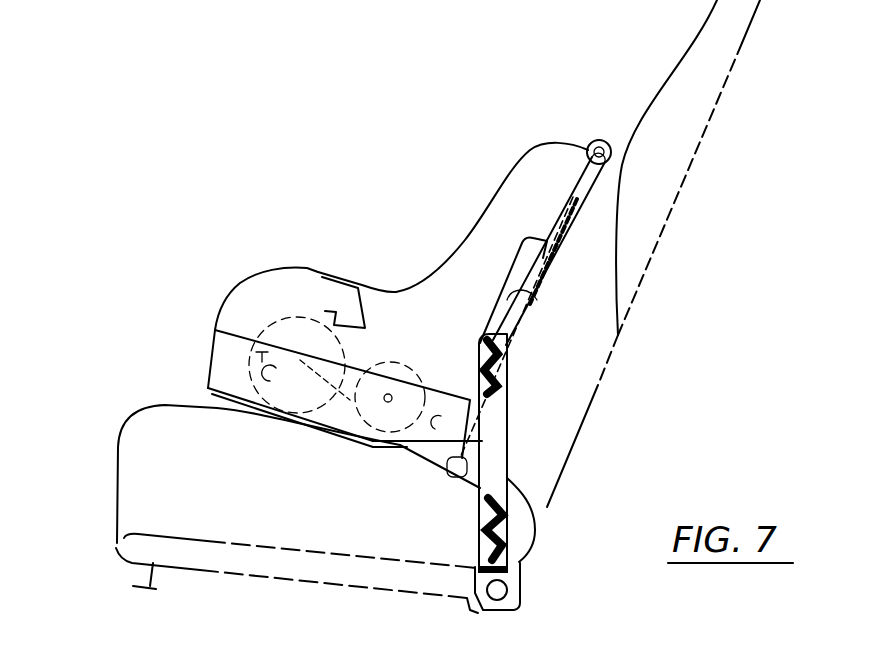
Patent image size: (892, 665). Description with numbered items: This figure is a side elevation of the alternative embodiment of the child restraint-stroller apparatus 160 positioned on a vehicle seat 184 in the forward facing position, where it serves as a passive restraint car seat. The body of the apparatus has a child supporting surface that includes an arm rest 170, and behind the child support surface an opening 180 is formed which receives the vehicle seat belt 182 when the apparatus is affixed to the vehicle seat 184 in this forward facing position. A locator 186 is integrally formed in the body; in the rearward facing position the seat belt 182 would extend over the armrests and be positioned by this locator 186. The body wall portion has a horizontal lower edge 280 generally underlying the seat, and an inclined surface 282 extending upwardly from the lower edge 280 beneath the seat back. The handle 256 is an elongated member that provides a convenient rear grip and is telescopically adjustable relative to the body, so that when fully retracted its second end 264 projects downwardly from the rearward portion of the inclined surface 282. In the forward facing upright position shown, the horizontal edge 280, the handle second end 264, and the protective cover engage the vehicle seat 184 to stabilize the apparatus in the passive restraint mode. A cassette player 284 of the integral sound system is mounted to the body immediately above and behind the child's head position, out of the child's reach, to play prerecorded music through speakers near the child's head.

The child restraint-stroller apparatus 160 is at (498, 189).
The arm rest 170 is at (257, 292).
The opening 180 is at (510, 310).
The vehicle seat belt 182 is at (502, 474).
The vehicle seat 184 is at (580, 381).
The locator 186 is at (326, 303).
The handle 256 is at (599, 140).
The handle second end 264 is at (510, 487).
The horizontal lower edge 280 is at (207, 384).
The inclined surface 282 is at (424, 478).
The cassette player 284 is at (580, 143).